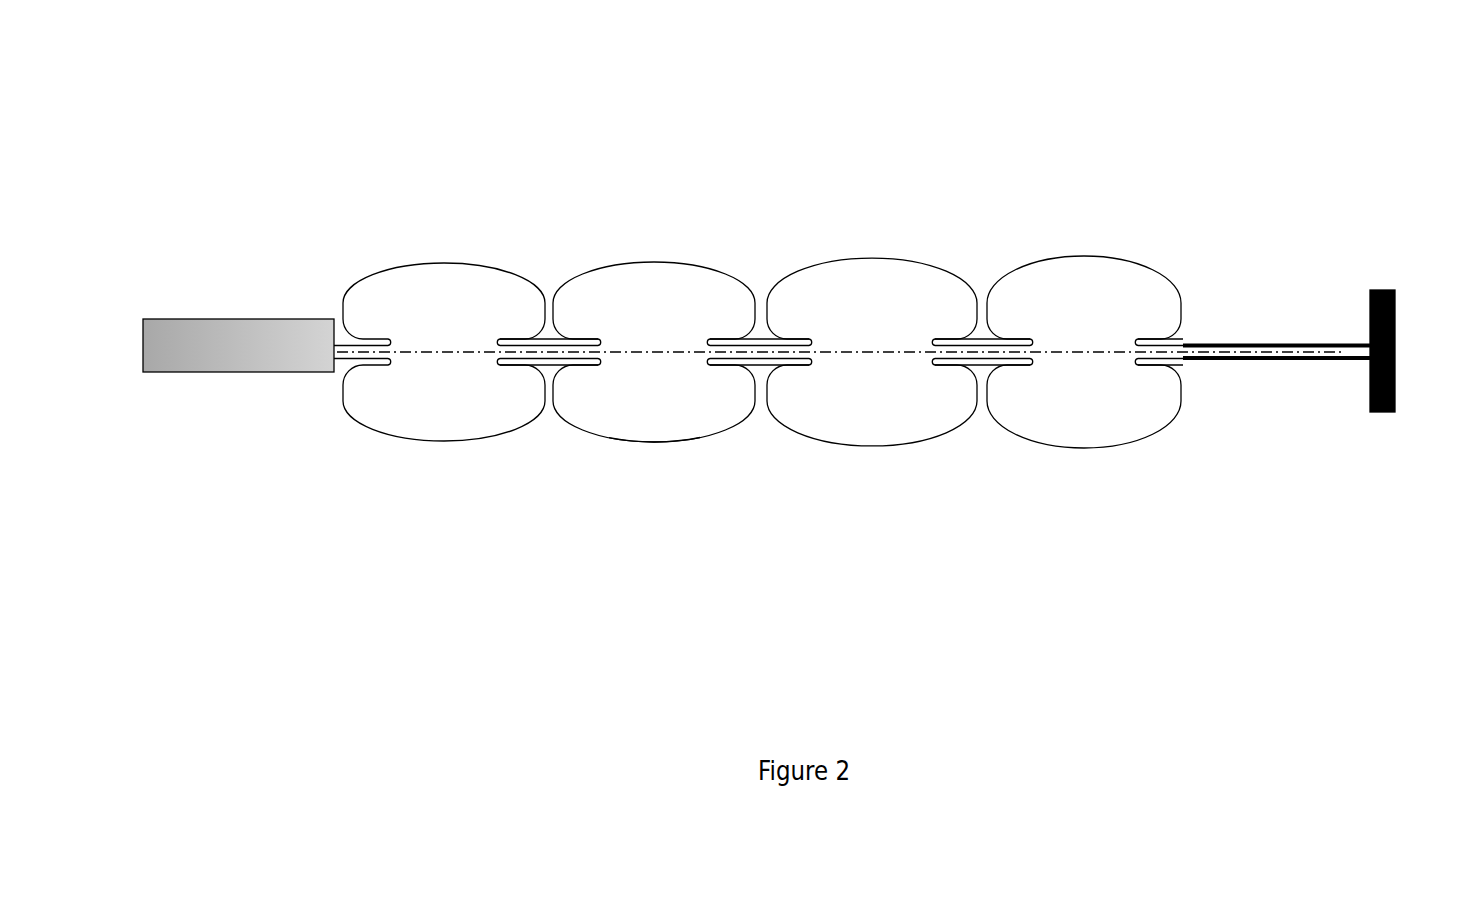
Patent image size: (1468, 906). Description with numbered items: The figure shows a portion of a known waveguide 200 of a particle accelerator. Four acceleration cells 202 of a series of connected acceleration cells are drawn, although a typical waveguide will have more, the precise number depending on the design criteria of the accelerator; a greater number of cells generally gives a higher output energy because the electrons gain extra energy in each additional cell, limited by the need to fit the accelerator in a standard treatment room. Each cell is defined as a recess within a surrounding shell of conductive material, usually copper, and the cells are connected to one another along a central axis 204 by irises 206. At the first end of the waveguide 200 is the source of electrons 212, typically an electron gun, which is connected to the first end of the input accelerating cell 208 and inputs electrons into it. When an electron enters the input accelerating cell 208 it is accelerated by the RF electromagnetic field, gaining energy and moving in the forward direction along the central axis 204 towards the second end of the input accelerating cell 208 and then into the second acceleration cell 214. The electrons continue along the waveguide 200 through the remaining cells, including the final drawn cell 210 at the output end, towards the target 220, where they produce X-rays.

The waveguide 200 is at (409, 137).
The acceleration cells 202 is at (777, 261).
The central axis 204 is at (853, 338).
The irises 206 is at (985, 333).
The input accelerating cell 208 is at (424, 459).
The last cavity 210 is at (1100, 466).
The source of electrons 212 is at (164, 381).
The second acceleration cell 214 is at (664, 449).
The target 220 is at (1402, 391).